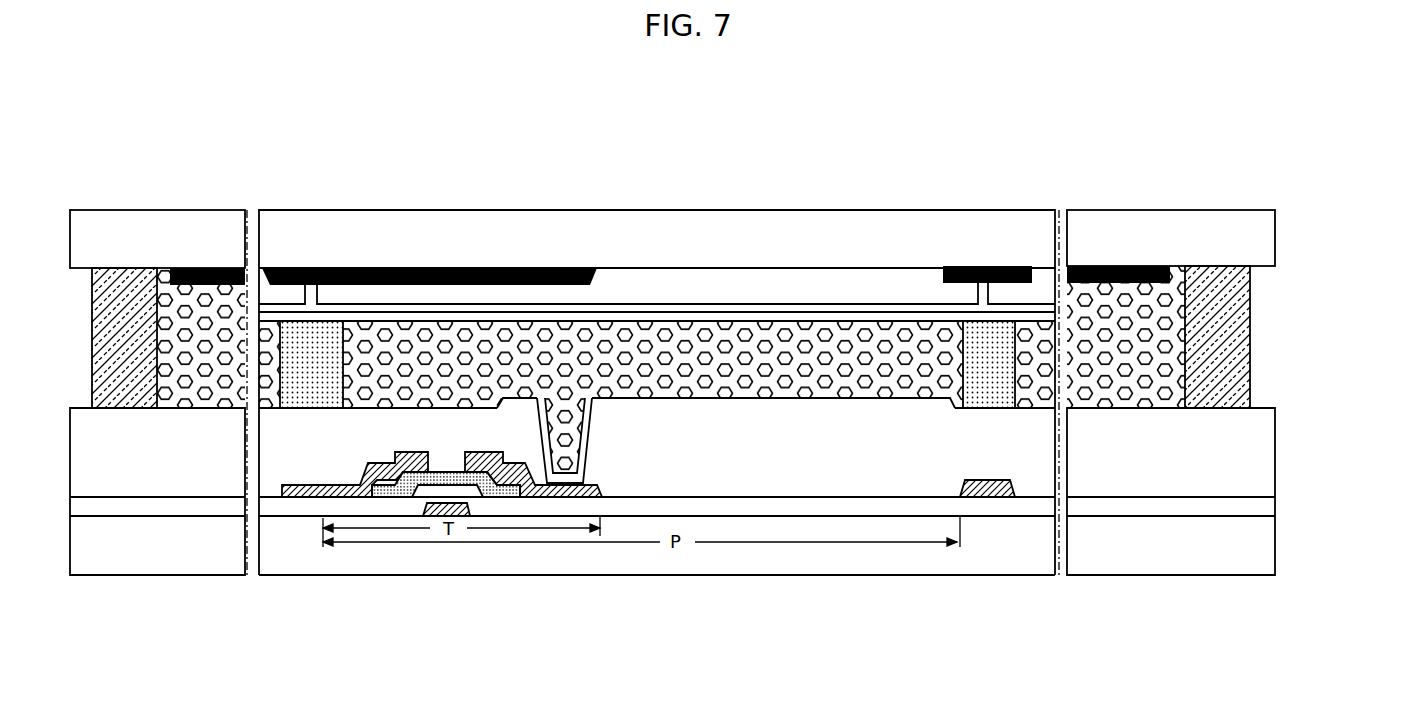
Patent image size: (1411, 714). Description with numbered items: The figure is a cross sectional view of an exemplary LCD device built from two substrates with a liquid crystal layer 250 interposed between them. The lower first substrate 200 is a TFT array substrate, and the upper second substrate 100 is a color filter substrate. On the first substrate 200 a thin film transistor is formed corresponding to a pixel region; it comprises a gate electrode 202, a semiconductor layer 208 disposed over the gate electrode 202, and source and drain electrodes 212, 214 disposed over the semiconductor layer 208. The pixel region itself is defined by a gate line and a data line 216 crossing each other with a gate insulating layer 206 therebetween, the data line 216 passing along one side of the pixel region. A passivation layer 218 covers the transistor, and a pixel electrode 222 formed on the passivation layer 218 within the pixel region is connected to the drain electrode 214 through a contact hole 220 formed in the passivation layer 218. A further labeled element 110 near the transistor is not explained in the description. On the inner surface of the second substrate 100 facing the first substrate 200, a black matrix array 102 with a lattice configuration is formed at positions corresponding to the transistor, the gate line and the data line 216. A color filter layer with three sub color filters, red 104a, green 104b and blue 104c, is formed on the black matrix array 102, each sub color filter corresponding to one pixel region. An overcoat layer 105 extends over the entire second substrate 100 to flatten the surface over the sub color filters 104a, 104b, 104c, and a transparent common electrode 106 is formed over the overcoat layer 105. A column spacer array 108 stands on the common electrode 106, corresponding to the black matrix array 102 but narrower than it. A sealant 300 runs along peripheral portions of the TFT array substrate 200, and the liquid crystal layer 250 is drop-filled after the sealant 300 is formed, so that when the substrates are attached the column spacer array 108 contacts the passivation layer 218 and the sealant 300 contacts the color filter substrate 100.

The second substrate 100 is at (330, 250).
The black matrix array 102 is at (528, 267).
The red sub color filter 104a is at (275, 283).
The green sub color filter 104b is at (752, 290).
The blue sub color filter 104c is at (1040, 292).
The overcoat layer 105 is at (828, 308).
The transparent common electrode 106 is at (693, 320).
The column spacer array 108 is at (1015, 370).
The thin film transistor 110 is at (393, 498).
The first substrate 200 is at (305, 560).
The gate electrode 202 is at (463, 517).
The gate insulating layer 206 is at (652, 516).
The semiconductor layer 208 is at (505, 498).
The source electrode 212 is at (330, 498).
The drain electrode 214 is at (575, 498).
The data line 216 is at (992, 497).
The passivation layer 218 is at (817, 468).
The contact hole 220 is at (577, 445).
The pixel electrode 222 is at (863, 405).
The liquid crystal layer 250 is at (428, 335).
The sealant 300 is at (1250, 332).